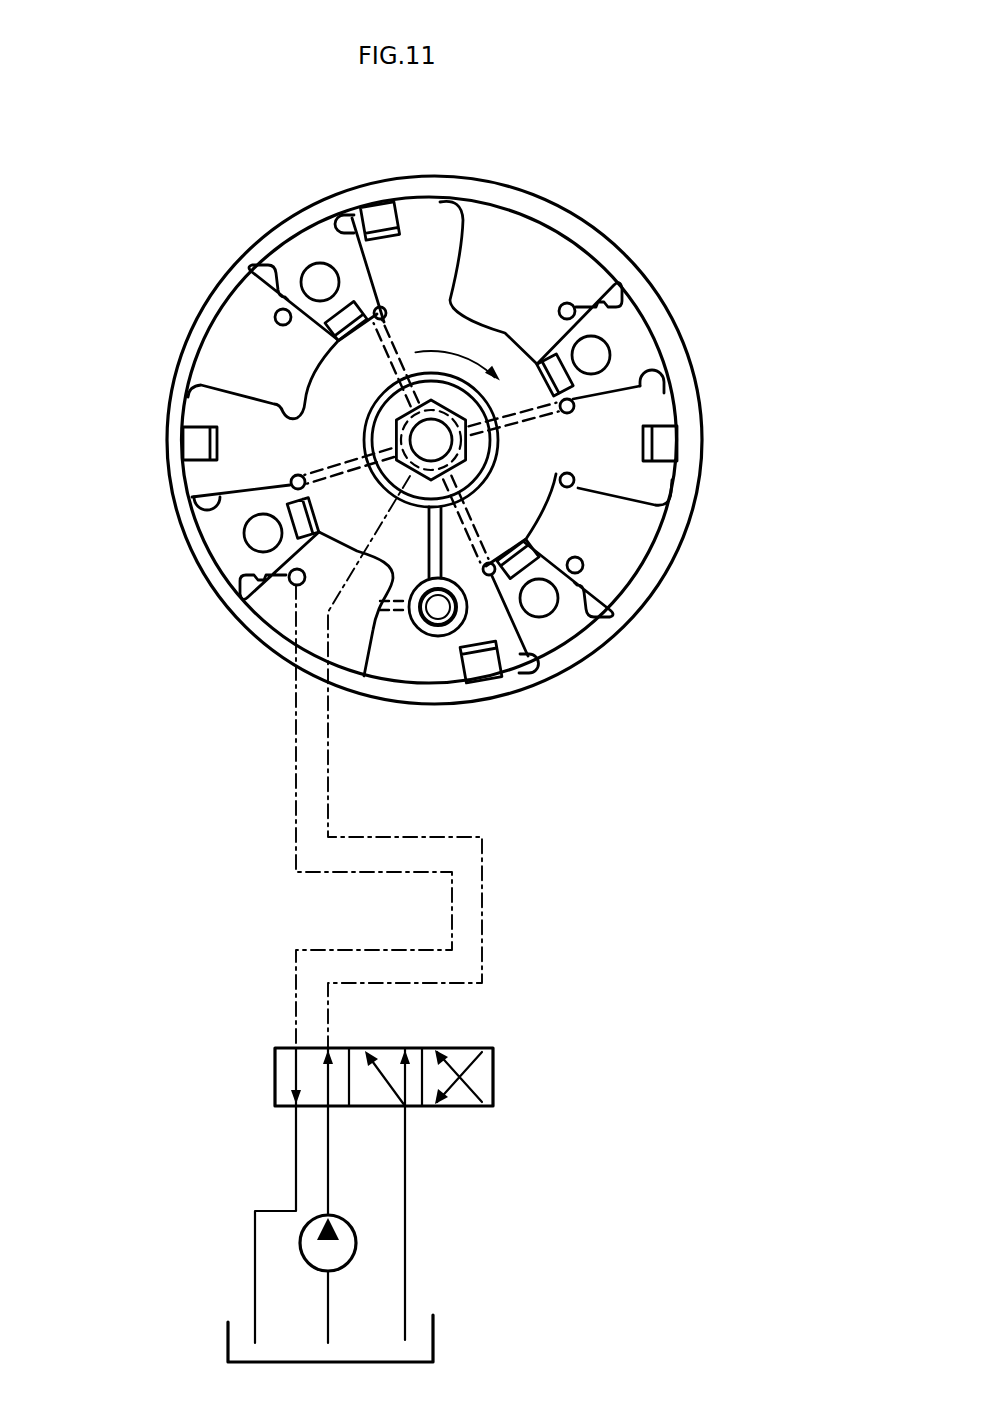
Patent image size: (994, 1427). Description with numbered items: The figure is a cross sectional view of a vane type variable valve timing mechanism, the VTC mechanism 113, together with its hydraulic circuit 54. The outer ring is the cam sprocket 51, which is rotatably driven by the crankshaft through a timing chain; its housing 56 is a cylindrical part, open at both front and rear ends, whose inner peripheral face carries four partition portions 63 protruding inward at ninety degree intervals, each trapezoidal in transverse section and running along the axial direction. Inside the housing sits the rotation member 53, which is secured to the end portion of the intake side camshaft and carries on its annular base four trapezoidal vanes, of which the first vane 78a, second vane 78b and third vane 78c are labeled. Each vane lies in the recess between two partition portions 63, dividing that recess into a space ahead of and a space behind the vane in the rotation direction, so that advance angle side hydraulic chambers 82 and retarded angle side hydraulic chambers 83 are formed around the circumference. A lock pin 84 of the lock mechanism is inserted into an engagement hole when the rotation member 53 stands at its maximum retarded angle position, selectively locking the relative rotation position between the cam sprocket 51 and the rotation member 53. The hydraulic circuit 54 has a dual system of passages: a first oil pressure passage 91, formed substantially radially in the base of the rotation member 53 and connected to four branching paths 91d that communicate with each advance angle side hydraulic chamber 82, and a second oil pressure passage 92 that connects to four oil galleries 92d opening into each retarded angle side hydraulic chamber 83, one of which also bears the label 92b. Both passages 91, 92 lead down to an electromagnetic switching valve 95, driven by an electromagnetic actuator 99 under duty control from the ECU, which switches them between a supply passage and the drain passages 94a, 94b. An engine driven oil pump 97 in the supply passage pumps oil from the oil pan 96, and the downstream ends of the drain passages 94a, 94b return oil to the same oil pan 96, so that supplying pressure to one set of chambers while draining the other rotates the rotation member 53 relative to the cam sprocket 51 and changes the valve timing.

The VTC mechanism 113 is at (650, 140).
The cam sprocket 51 is at (514, 176).
The housing 56 is at (554, 195).
The rotation member 53 is at (574, 493).
The first vane 78a is at (225, 480).
The second vane 78b is at (431, 236).
The third vane 78c is at (646, 413).
The advance angle side hydraulic chamber 82 is at (343, 214).
The partition portion 63 is at (300, 290).
The retarded angle side hydraulic chamber 83 is at (283, 375).
The lock pin 84 is at (443, 644).
The first oil pressure passage 91 is at (506, 424).
The branching path 91d is at (383, 373).
The second oil pressure passage 92 is at (450, 900).
The second oil passage port 92b is at (568, 303).
The oil gallery 92d is at (277, 311).
The hydraulic circuit 54 is at (492, 978).
The electromagnetic switching valve 95 is at (376, 1044).
The electromagnetic actuator 99 is at (462, 1048).
The drain passage 94a is at (296, 1158).
The drain passage 94b is at (328, 1192).
The oil pump 97 is at (345, 1268).
The oil pan 96 is at (228, 1338).